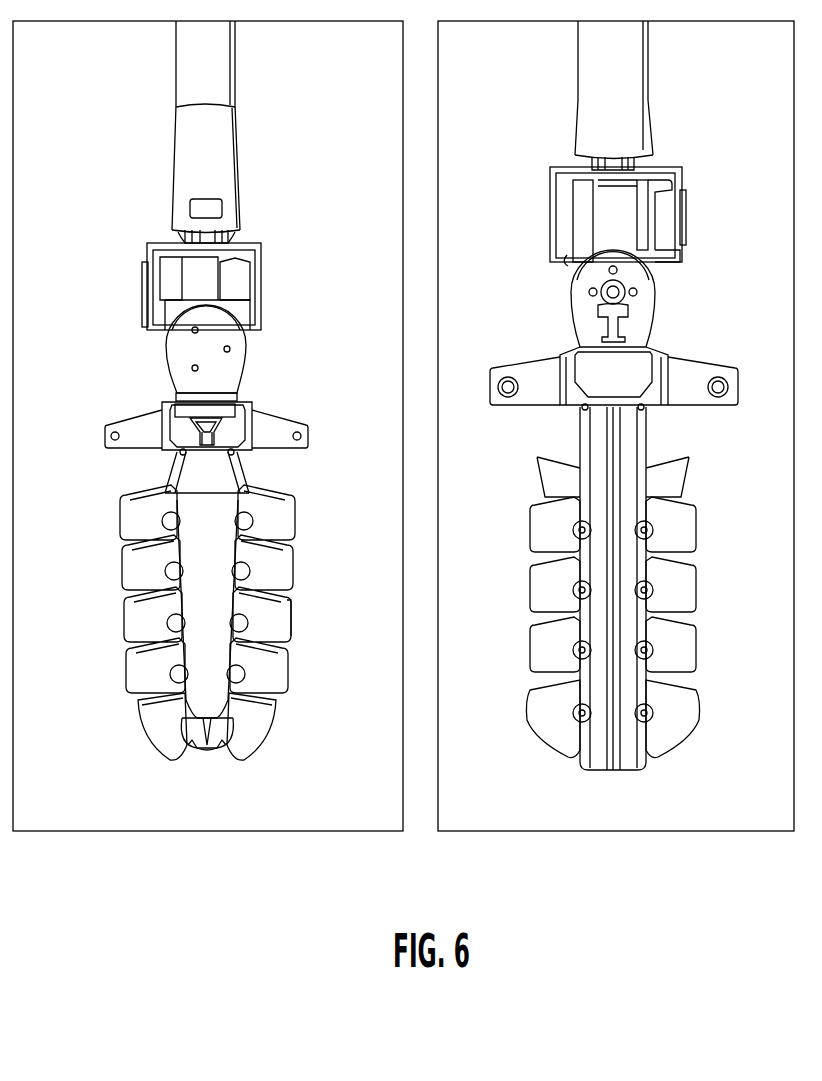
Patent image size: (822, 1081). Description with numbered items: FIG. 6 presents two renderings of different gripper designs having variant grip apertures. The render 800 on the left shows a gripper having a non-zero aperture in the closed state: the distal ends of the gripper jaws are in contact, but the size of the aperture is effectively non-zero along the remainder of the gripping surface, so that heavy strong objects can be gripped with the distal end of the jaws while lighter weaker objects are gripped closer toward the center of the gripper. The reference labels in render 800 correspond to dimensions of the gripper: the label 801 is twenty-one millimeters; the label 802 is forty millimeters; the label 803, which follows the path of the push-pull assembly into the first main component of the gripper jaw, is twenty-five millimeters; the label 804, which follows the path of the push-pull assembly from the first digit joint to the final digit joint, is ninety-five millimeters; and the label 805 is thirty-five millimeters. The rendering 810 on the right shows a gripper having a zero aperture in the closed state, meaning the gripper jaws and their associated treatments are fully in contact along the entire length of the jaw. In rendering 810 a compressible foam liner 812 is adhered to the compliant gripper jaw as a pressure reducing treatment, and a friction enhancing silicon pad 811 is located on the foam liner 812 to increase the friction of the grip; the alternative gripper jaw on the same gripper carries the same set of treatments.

The render of gripper with non-zero aperture 800 is at (72, 62).
The rendering of gripper with zero aperture 810 is at (501, 62).
The dimension label of twenty-one millimeters 801 is at (205, 452).
The dimension label of forty millimeters 802 is at (205, 494).
The dimension label of push-pull assembly path into first main component 803 is at (263, 700).
The dimension label of push-pull assembly path from first to final digit joint 804 is at (282, 605).
The dimension label of thirty-five millimeters 805 is at (207, 740).
The silicon pad 811 is at (610, 770).
The foam liner 812 is at (628, 770).